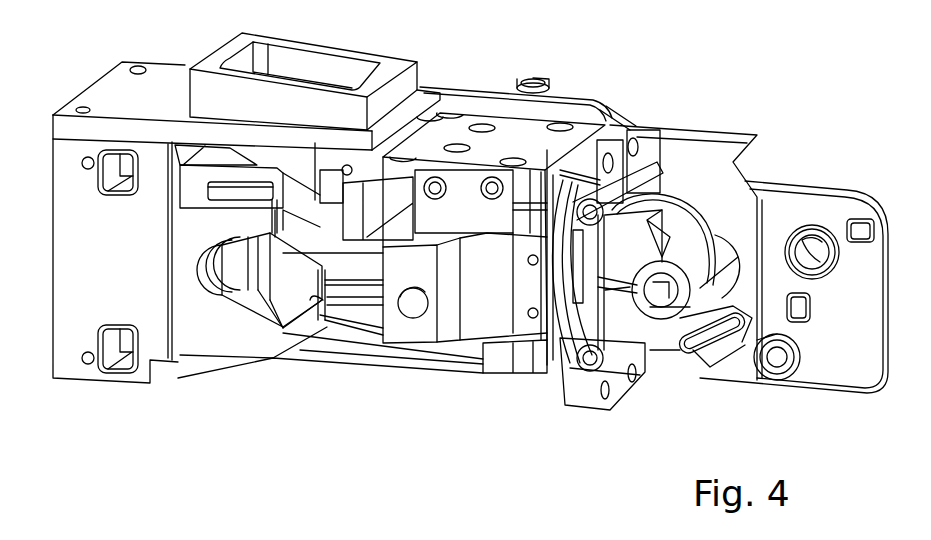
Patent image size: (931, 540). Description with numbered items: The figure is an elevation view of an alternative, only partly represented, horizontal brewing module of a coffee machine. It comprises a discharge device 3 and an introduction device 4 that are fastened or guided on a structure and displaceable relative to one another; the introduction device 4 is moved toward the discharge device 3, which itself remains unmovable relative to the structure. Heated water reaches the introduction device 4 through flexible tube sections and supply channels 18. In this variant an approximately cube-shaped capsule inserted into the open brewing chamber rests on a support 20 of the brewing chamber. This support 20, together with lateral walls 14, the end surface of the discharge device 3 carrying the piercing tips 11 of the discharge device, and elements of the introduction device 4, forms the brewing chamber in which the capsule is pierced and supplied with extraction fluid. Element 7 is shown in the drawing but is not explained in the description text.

The discharge device 3 is at (200, 315).
The introduction device 4 is at (518, 392).
The guide block 7 is at (306, 54).
The piercing tips of the discharge device 11 is at (222, 250).
The lateral walls 14 is at (258, 308).
The supply channels 18 is at (712, 348).
The support 20 is at (323, 300).